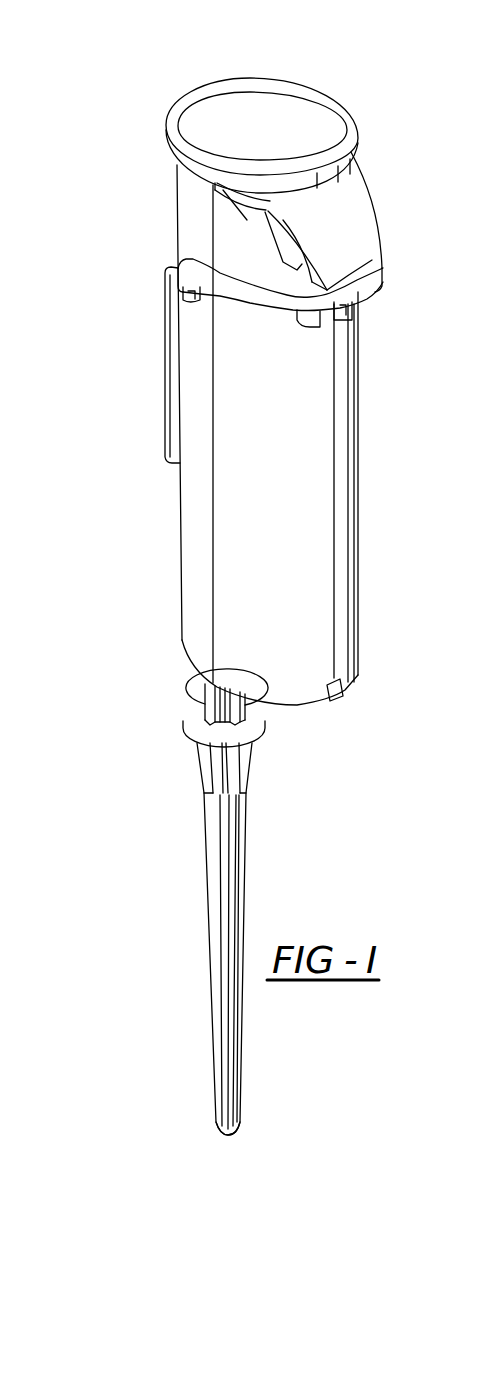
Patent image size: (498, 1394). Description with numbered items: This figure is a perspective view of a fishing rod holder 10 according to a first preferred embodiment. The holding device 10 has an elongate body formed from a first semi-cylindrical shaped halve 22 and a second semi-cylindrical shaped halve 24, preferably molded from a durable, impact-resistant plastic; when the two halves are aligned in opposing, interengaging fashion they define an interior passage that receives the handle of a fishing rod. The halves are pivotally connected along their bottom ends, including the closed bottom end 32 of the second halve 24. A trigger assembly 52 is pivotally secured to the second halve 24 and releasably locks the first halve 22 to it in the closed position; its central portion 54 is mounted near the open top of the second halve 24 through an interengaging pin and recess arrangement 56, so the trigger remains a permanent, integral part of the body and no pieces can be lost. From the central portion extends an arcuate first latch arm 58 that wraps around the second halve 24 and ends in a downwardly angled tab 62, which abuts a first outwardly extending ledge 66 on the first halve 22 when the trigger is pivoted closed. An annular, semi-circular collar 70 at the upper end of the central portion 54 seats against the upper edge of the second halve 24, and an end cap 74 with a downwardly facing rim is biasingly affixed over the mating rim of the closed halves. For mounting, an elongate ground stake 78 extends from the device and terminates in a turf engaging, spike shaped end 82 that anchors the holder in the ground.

The fishing rod holder 10 is at (134, 436).
The first semi-cylindrical shaped halve 22 is at (176, 568).
The second semi-cylindrical shaped halve 24 is at (364, 573).
The closed bottom end 32 is at (317, 703).
The trigger assembly 52 is at (378, 203).
The central portion 54 is at (360, 248).
The interengaging pin and recess arrangement 56 is at (353, 313).
The first latch arm 58 is at (271, 306).
The downwardly angled tab 62 is at (174, 275).
The first outwardly extending ledge 66 is at (197, 292).
The annular and semi-circular shaped collar 70 is at (240, 201).
The end cap 74 is at (202, 98).
The elongate ground stake 78 is at (192, 788).
The turf engaging and spike shaped end 82 is at (220, 1132).